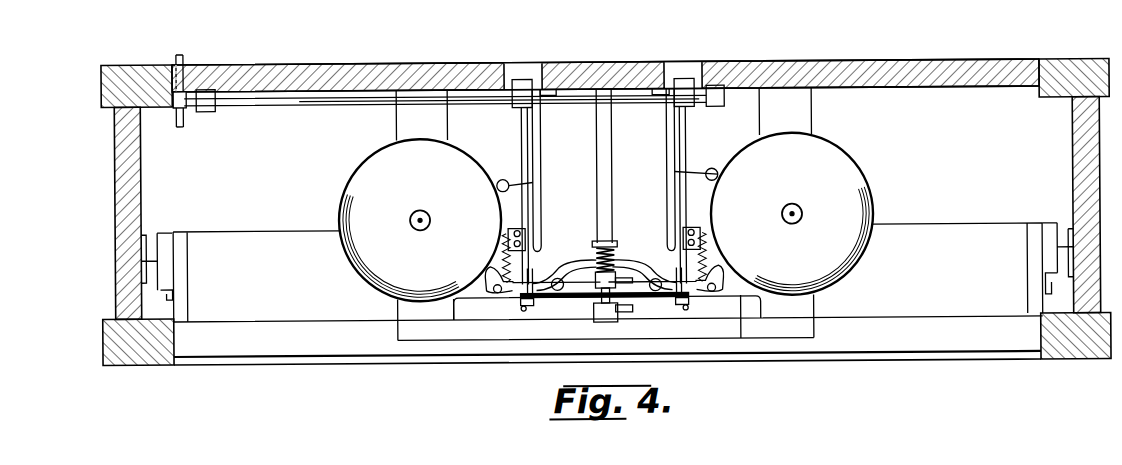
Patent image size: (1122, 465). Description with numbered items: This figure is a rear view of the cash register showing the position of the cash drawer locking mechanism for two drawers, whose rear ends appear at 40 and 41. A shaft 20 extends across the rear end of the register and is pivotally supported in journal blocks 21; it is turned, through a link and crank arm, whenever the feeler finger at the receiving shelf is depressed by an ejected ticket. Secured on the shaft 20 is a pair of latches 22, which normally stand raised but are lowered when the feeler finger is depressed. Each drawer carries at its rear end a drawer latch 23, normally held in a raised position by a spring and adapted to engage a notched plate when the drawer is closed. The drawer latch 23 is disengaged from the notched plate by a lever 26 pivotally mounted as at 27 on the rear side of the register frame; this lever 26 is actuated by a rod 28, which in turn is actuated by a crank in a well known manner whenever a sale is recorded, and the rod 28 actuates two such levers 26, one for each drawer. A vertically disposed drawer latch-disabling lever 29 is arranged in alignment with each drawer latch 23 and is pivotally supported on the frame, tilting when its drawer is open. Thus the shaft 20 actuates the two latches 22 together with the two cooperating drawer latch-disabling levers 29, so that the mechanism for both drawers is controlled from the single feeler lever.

The shaft 20 is at (322, 105).
The journal blocks 21 is at (212, 104).
The latches 22 is at (523, 79).
The drawer latch 23 is at (520, 310).
The lever 26 is at (546, 290).
The pivot 27 is at (558, 291).
The rod 28 is at (603, 168).
The drawer latch-disabling lever 29 is at (528, 160).
The rear end of drawer 40 is at (257, 276).
The rear end of drawer 41 is at (957, 268).